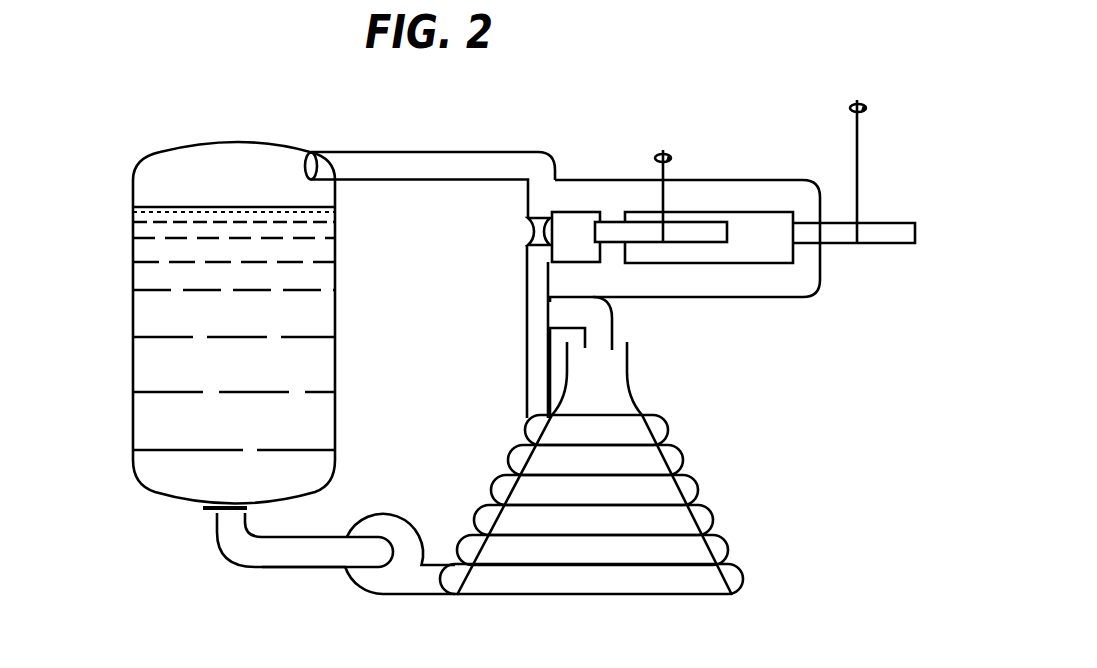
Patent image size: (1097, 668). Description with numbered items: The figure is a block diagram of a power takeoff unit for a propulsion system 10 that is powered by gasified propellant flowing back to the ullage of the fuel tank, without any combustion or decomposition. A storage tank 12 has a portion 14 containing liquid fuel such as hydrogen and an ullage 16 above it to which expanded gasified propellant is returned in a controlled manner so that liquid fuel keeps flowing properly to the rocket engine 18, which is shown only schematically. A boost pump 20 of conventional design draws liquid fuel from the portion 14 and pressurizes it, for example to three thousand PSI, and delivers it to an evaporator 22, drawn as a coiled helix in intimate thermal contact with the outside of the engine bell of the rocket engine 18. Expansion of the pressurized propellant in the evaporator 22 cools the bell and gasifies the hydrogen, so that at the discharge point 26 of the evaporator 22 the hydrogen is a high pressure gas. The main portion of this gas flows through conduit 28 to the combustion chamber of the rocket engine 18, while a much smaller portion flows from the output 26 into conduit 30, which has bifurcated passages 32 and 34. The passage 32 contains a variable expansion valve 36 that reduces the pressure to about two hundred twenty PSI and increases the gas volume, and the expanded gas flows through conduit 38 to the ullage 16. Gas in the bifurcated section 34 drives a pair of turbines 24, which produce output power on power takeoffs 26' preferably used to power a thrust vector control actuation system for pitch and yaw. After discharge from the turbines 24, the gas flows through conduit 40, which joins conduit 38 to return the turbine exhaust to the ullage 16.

The propulsion system 10 is at (493, 118).
The storage tank 12 is at (118, 270).
The portion containing liquid fuel 14 is at (239, 427).
The ullage 16 is at (217, 178).
The rocket engine 18 is at (713, 512).
The boost pump 20 is at (350, 578).
The evaporator 22 is at (487, 480).
The turbines 24 is at (704, 202).
The discharge point of the evaporator 26 is at (533, 373).
The power takeoffs 26' is at (769, 140).
The conduit 28 is at (612, 338).
The conduit 30 is at (523, 354).
The passage 32 is at (540, 258).
The bifurcated section 34 is at (683, 298).
The variable expansion valve 36 is at (527, 248).
The conduit 38 is at (418, 150).
The conduit 40 is at (604, 179).